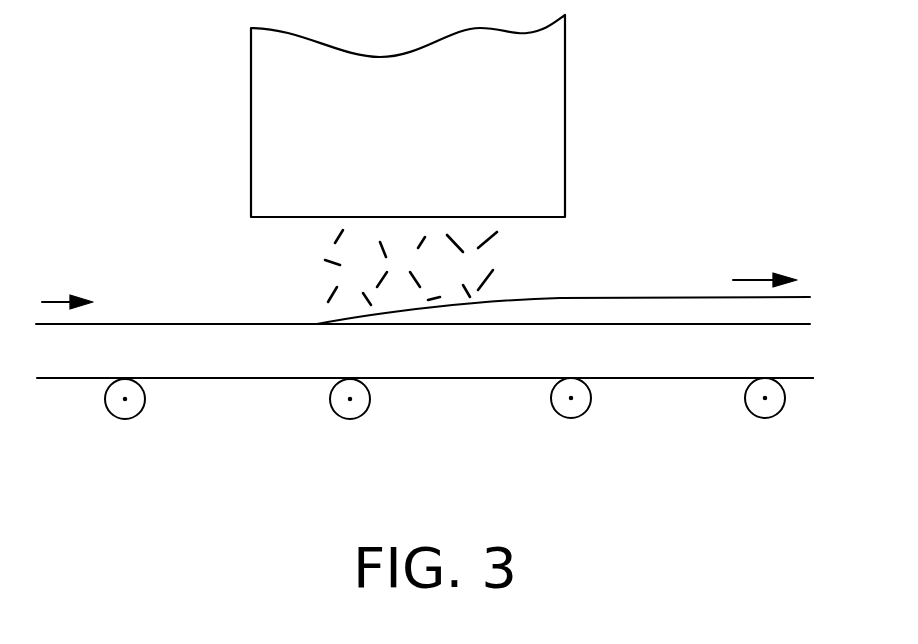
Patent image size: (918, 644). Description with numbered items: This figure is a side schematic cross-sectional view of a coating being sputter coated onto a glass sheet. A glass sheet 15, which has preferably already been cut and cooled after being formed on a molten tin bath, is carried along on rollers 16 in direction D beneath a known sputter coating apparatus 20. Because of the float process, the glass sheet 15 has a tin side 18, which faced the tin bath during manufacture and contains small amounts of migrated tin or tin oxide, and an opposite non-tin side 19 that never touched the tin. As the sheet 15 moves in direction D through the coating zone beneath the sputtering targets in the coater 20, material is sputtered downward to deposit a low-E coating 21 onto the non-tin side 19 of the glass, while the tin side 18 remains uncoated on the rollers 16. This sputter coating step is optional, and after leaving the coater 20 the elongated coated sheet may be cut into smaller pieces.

The glass sheet 15 is at (493, 367).
The conveyor rollers 16 is at (127, 399).
The tin side 18 is at (682, 379).
The non-tin side 19 is at (136, 324).
The sputter coating apparatus 20 is at (540, 91).
The low-E coating 21 is at (547, 310).
The direction D is at (752, 280).